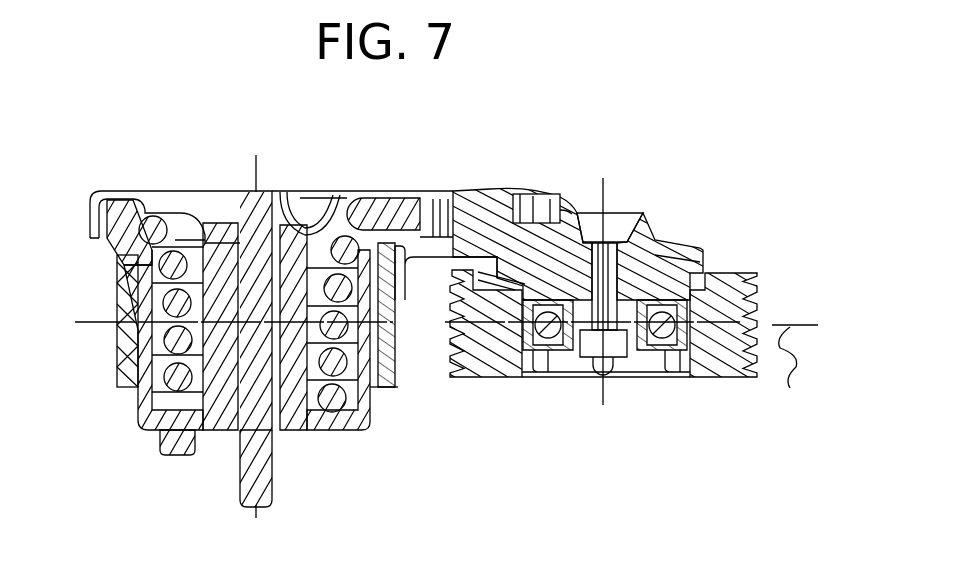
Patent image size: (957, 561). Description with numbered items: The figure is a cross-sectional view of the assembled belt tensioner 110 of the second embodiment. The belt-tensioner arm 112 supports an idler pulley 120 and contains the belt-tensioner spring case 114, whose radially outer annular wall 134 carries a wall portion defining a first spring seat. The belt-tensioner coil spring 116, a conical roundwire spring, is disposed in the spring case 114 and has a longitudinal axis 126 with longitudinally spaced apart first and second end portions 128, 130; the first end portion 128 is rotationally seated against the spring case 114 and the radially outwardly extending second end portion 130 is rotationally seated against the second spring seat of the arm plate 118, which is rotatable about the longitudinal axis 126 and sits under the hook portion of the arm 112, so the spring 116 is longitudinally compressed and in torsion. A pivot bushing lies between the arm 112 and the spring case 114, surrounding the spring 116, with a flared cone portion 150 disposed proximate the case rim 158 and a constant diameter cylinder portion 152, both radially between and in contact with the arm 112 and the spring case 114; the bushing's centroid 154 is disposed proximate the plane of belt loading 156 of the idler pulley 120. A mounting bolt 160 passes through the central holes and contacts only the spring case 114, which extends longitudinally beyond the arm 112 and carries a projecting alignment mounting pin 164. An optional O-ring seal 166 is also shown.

The belt tensioner 110 is at (470, 157).
The belt-tensioner arm 112 is at (117, 333).
The belt-tensioner spring case 114 is at (370, 420).
The belt-tensioner coil spring 116 is at (137, 397).
The arm plate 118 is at (138, 191).
The idler pulley 120 is at (757, 303).
The longitudinal axis 126 is at (256, 158).
The first end portion 128 is at (333, 412).
The second end portion 130 is at (410, 195).
The radially outer annular wall 134 is at (117, 357).
The cone portion 150 is at (400, 263).
The cylinder portion 152 is at (395, 350).
The centroid 154 is at (272, 422).
The plane of belt loading 156 is at (790, 375).
The case rim 158 is at (107, 242).
The mounting bolt 160 is at (240, 490).
The alignment mounting pin 164 is at (182, 457).
The O-ring seal 166 is at (293, 192).